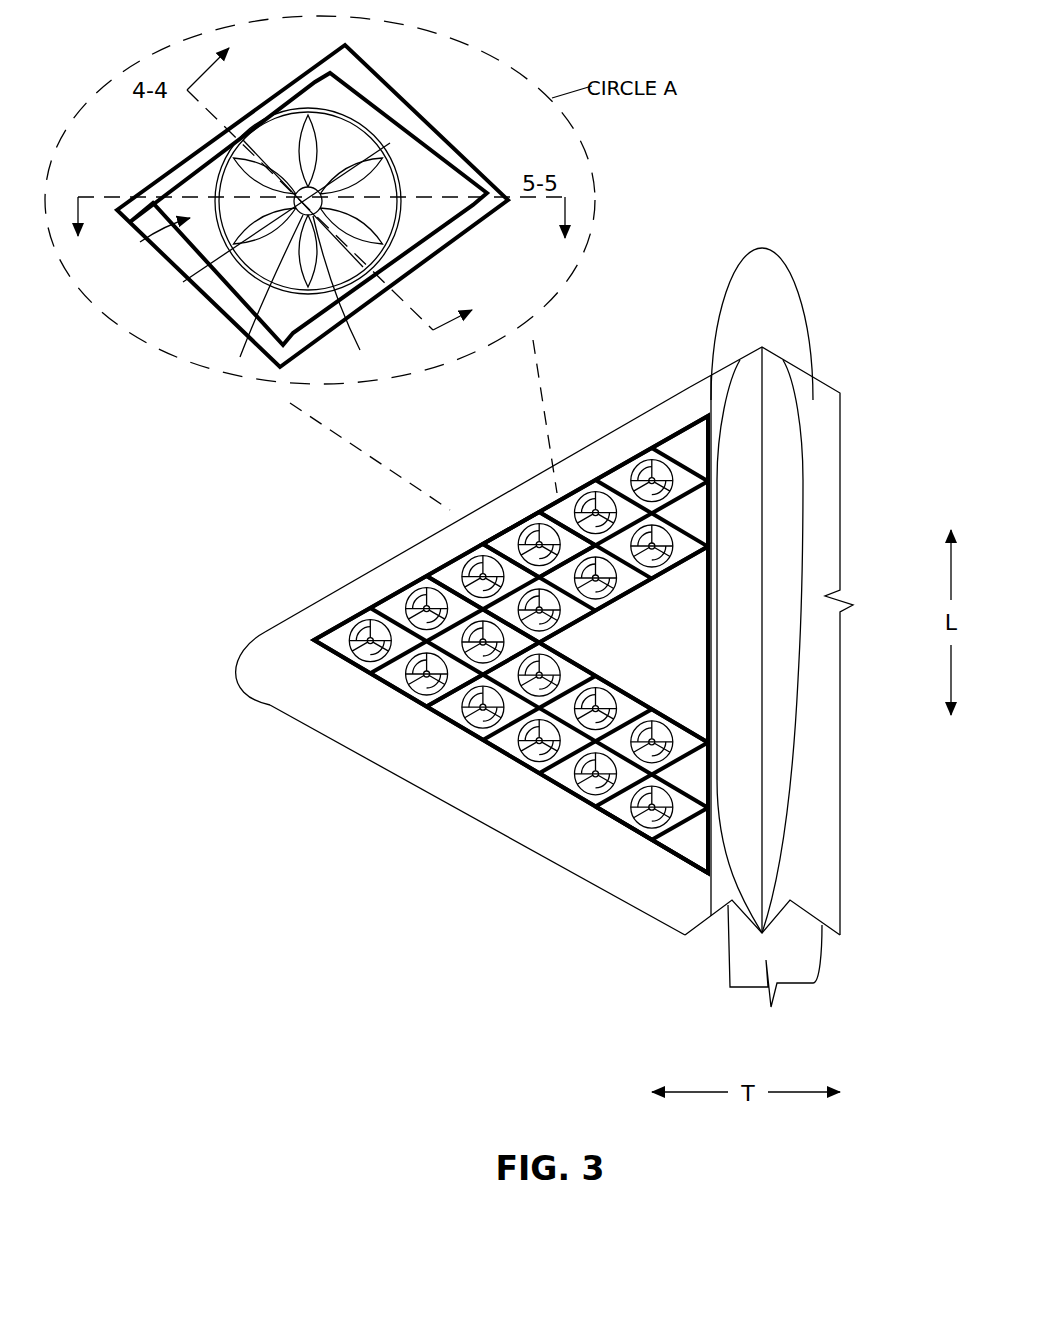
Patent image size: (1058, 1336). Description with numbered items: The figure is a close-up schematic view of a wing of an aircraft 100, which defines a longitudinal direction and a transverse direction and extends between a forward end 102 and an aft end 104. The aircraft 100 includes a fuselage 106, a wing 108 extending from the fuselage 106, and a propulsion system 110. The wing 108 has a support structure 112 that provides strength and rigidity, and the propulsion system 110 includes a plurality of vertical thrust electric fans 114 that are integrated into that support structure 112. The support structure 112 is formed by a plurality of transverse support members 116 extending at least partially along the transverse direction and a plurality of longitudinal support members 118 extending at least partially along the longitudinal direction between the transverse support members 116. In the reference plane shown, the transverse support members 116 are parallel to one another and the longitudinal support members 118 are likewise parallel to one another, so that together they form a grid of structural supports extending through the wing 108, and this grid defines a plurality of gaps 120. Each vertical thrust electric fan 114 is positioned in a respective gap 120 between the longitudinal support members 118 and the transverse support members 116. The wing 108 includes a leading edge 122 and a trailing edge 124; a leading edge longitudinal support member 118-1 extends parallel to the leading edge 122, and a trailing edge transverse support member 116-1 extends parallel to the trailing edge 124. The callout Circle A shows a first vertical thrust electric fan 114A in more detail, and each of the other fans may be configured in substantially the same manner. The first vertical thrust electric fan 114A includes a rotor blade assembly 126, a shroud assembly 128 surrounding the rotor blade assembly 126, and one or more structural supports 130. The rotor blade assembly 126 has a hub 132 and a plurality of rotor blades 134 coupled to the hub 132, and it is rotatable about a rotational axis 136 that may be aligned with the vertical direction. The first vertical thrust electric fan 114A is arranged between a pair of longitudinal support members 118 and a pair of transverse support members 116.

The aircraft 100 is at (826, 248).
The forward end 102 is at (765, 217).
The aft end 104 is at (655, 1008).
The fuselage 106 is at (795, 330).
The wing 108 is at (416, 777).
The propulsion system 110 is at (357, 586).
The support structure 112 is at (541, 864).
The vertical thrust electric fans 114 is at (558, 632).
The first vertical thrust electric fan 114A is at (512, 513).
The transverse support members 116 is at (638, 586).
The trailing edge transverse support member 116-1 is at (667, 860).
The longitudinal support members 118 is at (606, 496).
The leading edge longitudinal support member 118-1 is at (695, 430).
The gaps 120 is at (418, 828).
The leading edge 122 is at (529, 483).
The trailing edge 124 is at (527, 805).
The rotor blade assembly 126 is at (340, 140).
The shroud assembly 128 is at (353, 291).
The structural supports 130 is at (393, 243).
The hub 132 is at (247, 293).
The rotor blades 134 is at (275, 231).
The rotational axis 136 is at (388, 168).